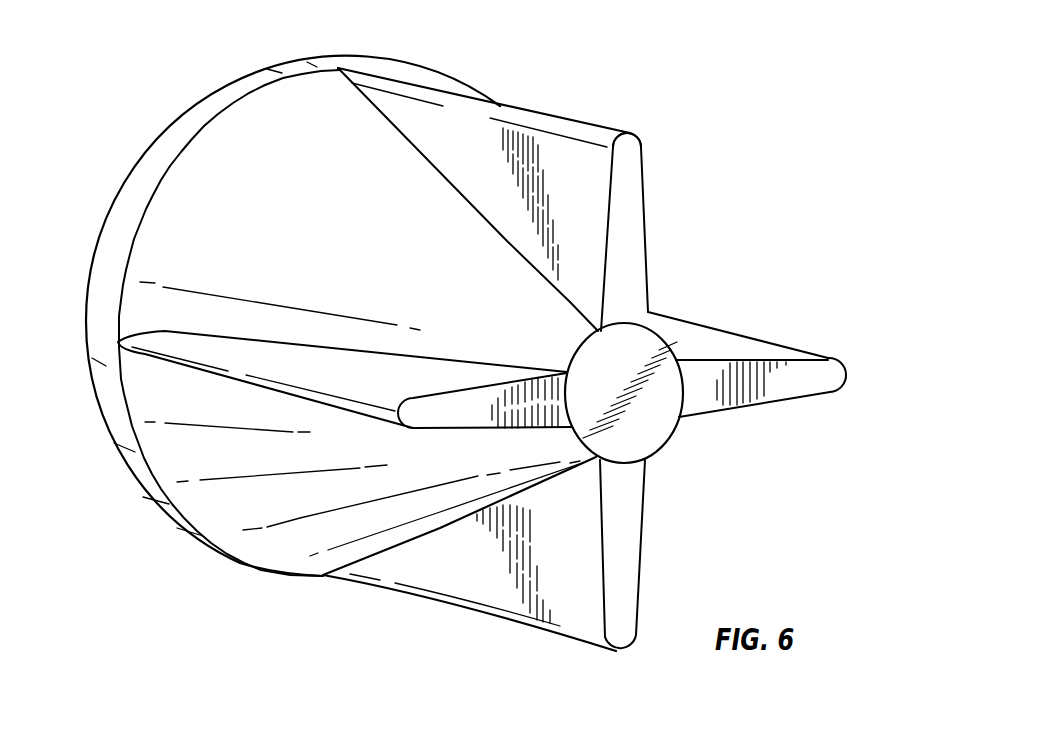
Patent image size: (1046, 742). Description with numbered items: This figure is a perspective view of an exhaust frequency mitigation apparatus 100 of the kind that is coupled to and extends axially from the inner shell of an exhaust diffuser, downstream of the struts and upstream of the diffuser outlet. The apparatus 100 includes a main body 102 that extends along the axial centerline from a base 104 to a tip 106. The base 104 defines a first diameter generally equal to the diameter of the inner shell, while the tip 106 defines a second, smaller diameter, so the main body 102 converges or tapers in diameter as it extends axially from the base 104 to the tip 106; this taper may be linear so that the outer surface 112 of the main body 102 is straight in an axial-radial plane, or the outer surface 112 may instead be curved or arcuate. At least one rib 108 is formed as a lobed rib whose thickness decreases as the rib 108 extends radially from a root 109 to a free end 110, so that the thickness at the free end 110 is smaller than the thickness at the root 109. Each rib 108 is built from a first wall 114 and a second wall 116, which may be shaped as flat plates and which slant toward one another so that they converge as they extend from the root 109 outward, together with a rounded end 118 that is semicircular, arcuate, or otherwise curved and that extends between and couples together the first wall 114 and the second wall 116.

The exhaust frequency mitigation apparatus 100 is at (758, 67).
The main body 102 is at (275, 178).
The base 104 is at (100, 247).
The tip 106 is at (673, 428).
The rib 108 is at (505, 338).
The root 109 is at (523, 253).
The free end 110 is at (545, 120).
The outer surface 112 is at (262, 567).
The first wall 114 is at (642, 212).
The second wall 116 is at (475, 175).
The rounded end 118 is at (597, 133).